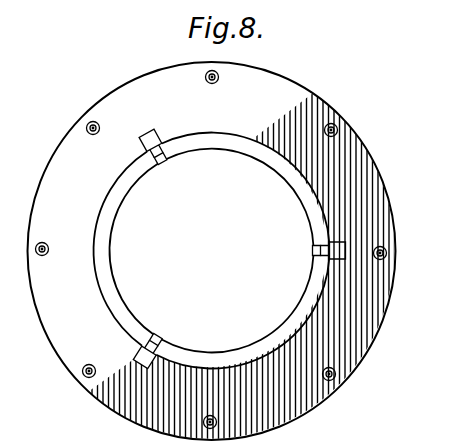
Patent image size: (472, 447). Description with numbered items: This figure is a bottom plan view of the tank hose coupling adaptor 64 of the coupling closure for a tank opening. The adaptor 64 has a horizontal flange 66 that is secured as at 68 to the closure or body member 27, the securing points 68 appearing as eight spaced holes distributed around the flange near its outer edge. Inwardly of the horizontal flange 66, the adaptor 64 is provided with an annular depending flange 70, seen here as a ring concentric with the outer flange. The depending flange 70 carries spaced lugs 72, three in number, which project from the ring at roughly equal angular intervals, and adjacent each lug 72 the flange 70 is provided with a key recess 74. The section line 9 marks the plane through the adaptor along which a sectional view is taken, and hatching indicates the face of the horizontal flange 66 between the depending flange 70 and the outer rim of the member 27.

The body member 27 is at (68, 331).
The hose coupling adaptor 64 is at (308, 93).
The horizontal flange 66 is at (378, 184).
The securing means 68 is at (86, 377).
The annular depending flange 70 is at (107, 256).
The lugs 72 is at (146, 143).
The key recesses 74 is at (163, 160).
The section line 9- 9 is at (13, 272).